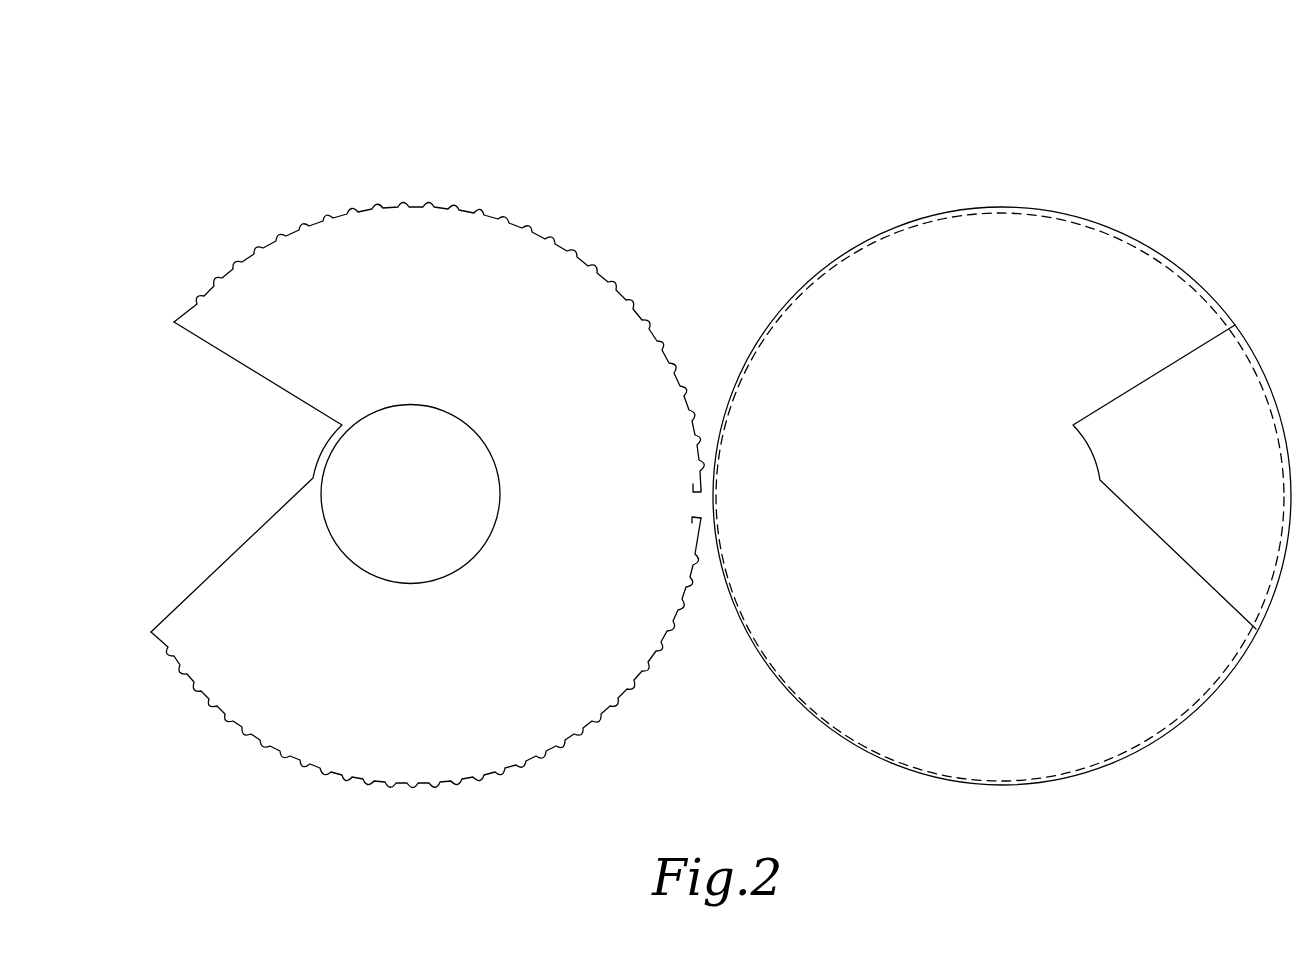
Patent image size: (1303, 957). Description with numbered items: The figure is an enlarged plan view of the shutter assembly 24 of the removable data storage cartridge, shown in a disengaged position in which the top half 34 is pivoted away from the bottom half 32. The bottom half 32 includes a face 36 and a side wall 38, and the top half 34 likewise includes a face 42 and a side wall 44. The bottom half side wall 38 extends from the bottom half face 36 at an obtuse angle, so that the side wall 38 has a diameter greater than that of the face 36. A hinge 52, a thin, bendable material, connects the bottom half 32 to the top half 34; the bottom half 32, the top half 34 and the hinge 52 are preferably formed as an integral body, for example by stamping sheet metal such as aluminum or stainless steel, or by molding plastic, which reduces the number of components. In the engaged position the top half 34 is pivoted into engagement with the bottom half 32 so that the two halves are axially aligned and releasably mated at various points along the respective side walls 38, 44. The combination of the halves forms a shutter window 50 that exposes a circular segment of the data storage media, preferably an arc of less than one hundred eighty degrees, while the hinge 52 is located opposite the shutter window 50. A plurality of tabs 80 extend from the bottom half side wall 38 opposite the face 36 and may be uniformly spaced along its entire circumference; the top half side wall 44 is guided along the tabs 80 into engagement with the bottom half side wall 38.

The shutter assembly 24 is at (866, 122).
The bottom half 32 is at (427, 498).
The top half 34 is at (1002, 512).
The face 36 is at (427, 471).
The side wall 38 is at (500, 208).
The face 42 is at (836, 285).
The side wall 44 is at (1153, 248).
The shutter window 50 is at (264, 378).
The hinge 52 is at (704, 504).
The tabs 80 is at (395, 205).